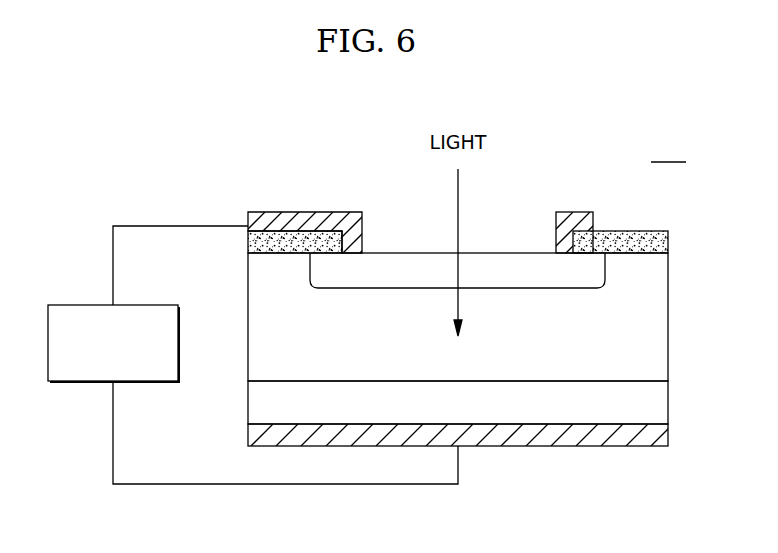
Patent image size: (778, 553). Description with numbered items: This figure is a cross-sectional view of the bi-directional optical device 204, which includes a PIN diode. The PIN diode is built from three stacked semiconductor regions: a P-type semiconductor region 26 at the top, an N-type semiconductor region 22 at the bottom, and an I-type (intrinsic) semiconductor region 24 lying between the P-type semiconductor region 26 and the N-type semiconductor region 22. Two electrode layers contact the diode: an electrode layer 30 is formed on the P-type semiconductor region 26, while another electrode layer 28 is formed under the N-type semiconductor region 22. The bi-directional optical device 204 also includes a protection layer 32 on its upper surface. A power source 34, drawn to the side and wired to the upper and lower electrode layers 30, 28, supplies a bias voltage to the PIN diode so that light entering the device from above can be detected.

The bi-directional optical device 204 is at (570, 238).
The N-type semiconductor region 22 is at (657, 400).
The I-type semiconductor region 24 is at (657, 330).
The P-type semiconductor region 26 is at (594, 270).
The electrode layer 28 is at (657, 437).
The electrode layer 30 is at (578, 214).
The protection layer 32 is at (659, 239).
The power source 34 is at (130, 304).